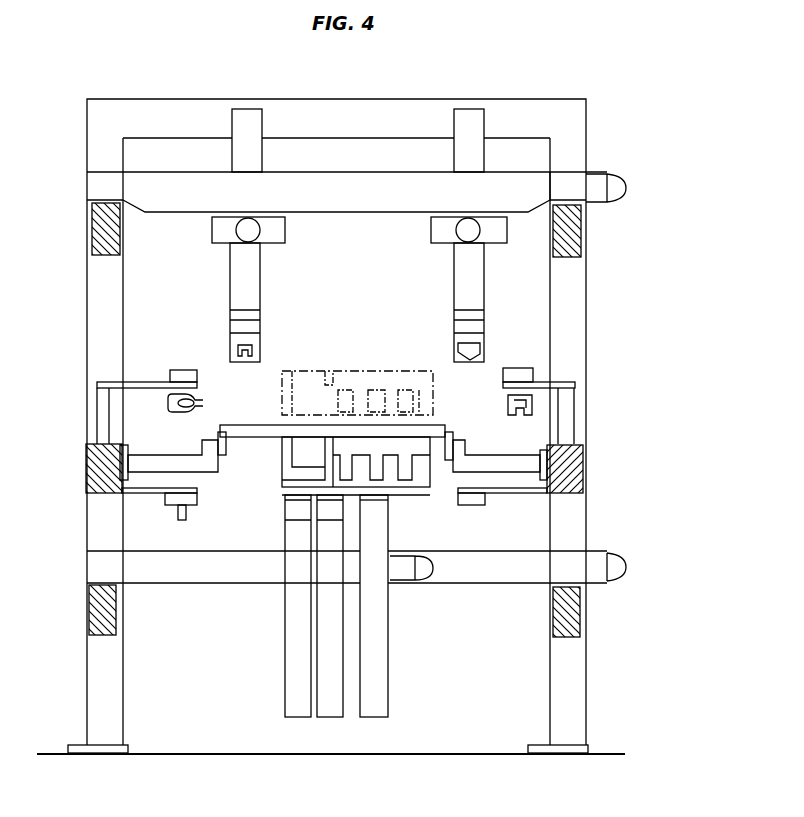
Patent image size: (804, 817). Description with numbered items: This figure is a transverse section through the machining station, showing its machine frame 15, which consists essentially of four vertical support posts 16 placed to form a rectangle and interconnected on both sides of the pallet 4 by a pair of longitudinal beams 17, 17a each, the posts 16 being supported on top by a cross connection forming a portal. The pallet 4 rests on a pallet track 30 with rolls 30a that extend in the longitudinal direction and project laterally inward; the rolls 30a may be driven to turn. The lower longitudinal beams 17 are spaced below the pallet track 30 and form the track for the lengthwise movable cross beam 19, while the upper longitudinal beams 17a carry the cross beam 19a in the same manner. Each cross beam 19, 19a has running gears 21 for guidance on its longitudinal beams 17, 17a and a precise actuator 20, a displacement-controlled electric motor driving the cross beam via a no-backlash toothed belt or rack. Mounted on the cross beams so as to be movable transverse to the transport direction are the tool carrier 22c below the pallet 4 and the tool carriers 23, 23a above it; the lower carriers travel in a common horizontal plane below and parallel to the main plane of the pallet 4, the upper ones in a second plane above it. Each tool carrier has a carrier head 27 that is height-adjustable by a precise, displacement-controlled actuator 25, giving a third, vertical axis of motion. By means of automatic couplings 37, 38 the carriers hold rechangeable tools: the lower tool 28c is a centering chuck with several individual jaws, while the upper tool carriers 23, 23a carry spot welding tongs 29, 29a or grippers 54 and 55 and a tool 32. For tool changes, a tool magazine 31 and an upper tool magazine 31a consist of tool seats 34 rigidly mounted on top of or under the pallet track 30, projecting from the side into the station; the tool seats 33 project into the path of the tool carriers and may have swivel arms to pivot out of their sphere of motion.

The machine frame 15 is at (614, 128).
The vertical support posts 16 is at (105, 708).
The lower longitudinal beam 17 is at (100, 608).
The upper longitudinal beam 17a is at (106, 230).
The cross beam 19 is at (152, 580).
The cross beam 19a is at (175, 180).
The actuator 20 is at (590, 193).
The running gear 21 is at (108, 185).
The tool carrier 22c is at (408, 668).
The tool carrier 23 is at (488, 301).
The tool carrier 23a is at (228, 302).
The actuator 25 is at (400, 580).
The carrier head 27 is at (247, 122).
The tool 28c is at (413, 488).
The spot welding tongs 29 is at (262, 337).
The spot welding tongs 29a is at (533, 403).
The pallet track 30 is at (492, 465).
The rolls 30a is at (216, 444).
The tool magazine 31 is at (162, 496).
The upper tool magazine 31a is at (540, 374).
The tool 32 is at (188, 496).
The tool seats 33 is at (147, 413).
The tool seats 34 is at (576, 385).
The automatic coupling 37 is at (245, 328).
The automatic coupling 38 is at (262, 314).
The pallet 4 is at (444, 430).
The gripper 54 is at (458, 338).
The gripper 55 is at (200, 400).